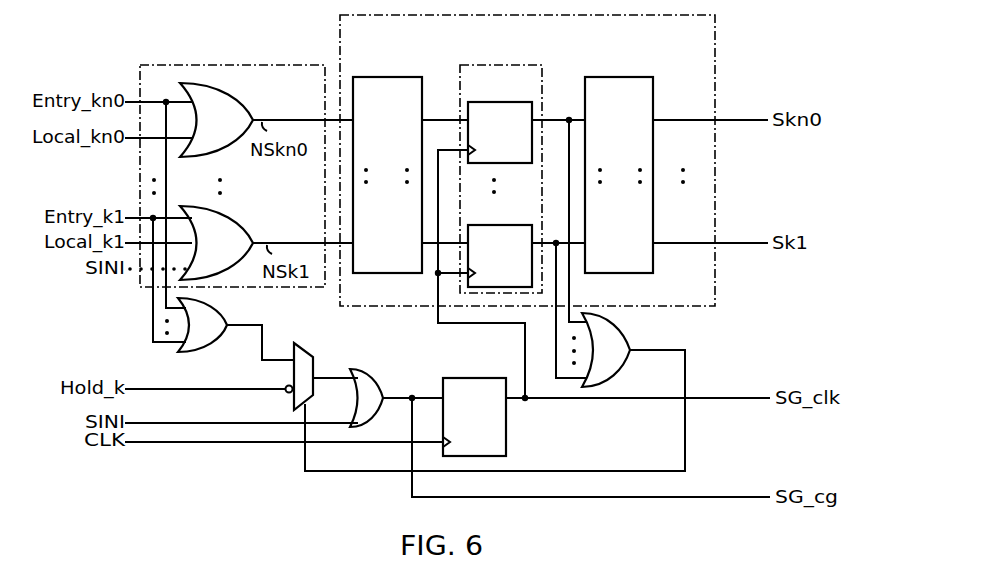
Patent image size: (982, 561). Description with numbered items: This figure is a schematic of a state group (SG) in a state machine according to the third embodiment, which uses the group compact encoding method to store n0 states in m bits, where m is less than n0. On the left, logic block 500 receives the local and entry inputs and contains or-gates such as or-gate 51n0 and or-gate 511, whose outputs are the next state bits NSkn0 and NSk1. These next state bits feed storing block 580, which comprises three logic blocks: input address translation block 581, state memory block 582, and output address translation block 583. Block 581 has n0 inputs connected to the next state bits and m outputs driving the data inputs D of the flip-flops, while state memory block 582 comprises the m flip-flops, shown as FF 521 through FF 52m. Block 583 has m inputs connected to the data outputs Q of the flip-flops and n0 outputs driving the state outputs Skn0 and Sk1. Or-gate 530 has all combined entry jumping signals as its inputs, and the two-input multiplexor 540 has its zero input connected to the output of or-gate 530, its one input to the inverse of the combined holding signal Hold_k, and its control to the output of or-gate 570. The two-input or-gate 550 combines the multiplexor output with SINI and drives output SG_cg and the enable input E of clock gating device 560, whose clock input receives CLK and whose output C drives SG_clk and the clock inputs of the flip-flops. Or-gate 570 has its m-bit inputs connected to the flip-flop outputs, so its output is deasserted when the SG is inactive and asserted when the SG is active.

The logic block 500 is at (226, 65).
The or-gate for entry n0 51n0 is at (230, 95).
The or-gate for entry 1 511 is at (230, 213).
The or-gate 530 is at (220, 310).
The 2-input multiplexor 540 is at (330, 352).
The 2-input or-gate 550 is at (365, 370).
The clock gating device 560 is at (468, 378).
The or-gate 570 is at (624, 362).
The storing block 580 is at (715, 73).
The input address translation block 581 is at (362, 77).
The state memory block 582 is at (478, 65).
The output address translation block 583 is at (596, 77).
The FF 52m is at (472, 102).
The FF 521 is at (472, 225).